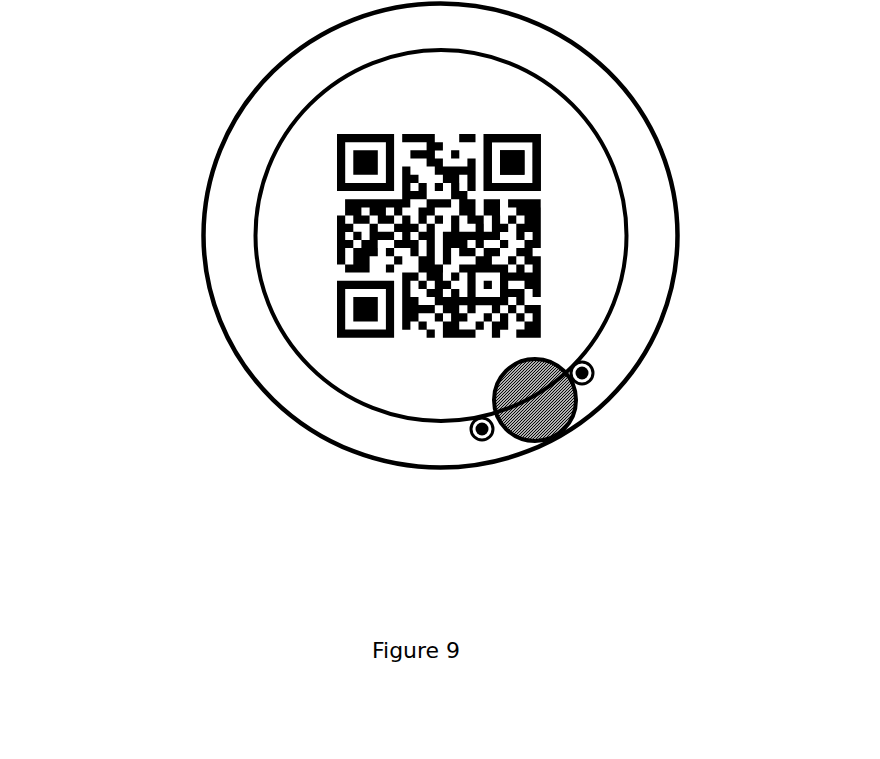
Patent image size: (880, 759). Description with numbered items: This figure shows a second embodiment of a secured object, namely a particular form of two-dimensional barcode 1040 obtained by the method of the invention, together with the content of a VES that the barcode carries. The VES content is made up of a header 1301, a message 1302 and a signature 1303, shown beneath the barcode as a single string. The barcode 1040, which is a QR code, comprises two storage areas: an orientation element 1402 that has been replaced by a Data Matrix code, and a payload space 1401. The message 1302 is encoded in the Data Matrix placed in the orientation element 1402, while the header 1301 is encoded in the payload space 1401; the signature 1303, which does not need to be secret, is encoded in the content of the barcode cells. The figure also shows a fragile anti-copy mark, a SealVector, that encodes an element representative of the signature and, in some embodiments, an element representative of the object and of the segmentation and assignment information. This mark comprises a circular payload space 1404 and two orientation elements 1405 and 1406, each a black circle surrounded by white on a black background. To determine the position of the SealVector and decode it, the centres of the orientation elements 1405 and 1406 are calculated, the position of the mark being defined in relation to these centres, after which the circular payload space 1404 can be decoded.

The 2D barcode 1040 is at (206, 87).
The payload space 1401 is at (433, 133).
The orientation element 1402 is at (507, 156).
The circular payload space 1404 is at (538, 441).
The orientation element 1405 is at (591, 384).
The orientation element 1406 is at (487, 441).
The header 1301 is at (422, 330).
The message 1302 is at (517, 162).
The signature 1303 is at (580, 546).